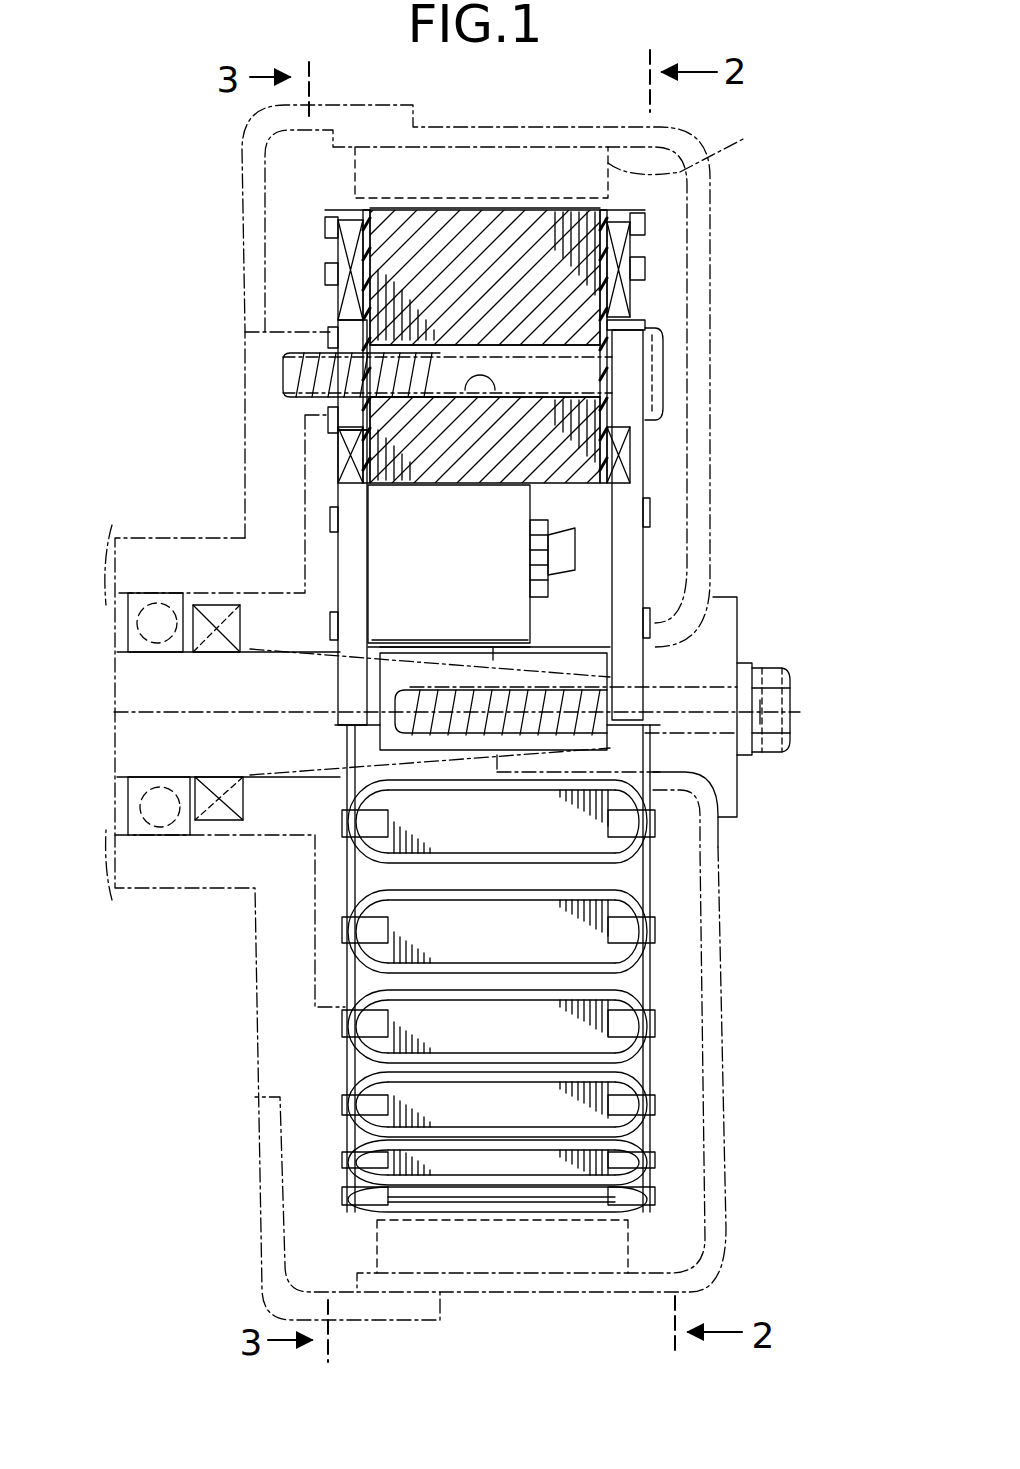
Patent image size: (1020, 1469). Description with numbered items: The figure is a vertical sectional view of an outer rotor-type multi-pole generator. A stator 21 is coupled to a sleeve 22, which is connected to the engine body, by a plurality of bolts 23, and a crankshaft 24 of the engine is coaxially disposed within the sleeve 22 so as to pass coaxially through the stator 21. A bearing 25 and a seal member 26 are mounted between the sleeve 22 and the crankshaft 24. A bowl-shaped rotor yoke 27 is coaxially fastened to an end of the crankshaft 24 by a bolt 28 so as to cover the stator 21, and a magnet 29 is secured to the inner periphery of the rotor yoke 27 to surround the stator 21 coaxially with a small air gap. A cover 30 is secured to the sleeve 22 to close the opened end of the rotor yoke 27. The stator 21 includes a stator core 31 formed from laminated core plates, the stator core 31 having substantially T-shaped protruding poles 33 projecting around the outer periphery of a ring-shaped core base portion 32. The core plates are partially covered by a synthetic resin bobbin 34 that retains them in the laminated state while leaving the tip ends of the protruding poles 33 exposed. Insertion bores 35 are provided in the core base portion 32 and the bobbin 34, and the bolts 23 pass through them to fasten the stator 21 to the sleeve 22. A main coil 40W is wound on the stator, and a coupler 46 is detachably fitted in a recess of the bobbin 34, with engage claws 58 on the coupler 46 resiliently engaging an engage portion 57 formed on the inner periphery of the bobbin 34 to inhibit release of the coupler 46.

The stator 21 is at (312, 278).
The sleeve 22 is at (160, 575).
The bolt 23 is at (652, 368).
The crankshaft 24 is at (236, 835).
The bearing 25 is at (178, 835).
The seal member 26 is at (216, 600).
The rotor yoke 27 is at (715, 425).
The bolt 28 is at (762, 660).
The magnet 29 is at (729, 147).
The cover 30 is at (240, 210).
The stator core 31 is at (551, 200).
The core base portion 32 is at (468, 478).
The protruding pole 33 is at (452, 235).
The bobbin 34 is at (330, 220).
The insertion bore 35 is at (497, 398).
The main coil 40W is at (620, 248).
The coupler 46 is at (484, 593).
The engage portion 57 is at (545, 590).
The engage claw 58 is at (563, 540).